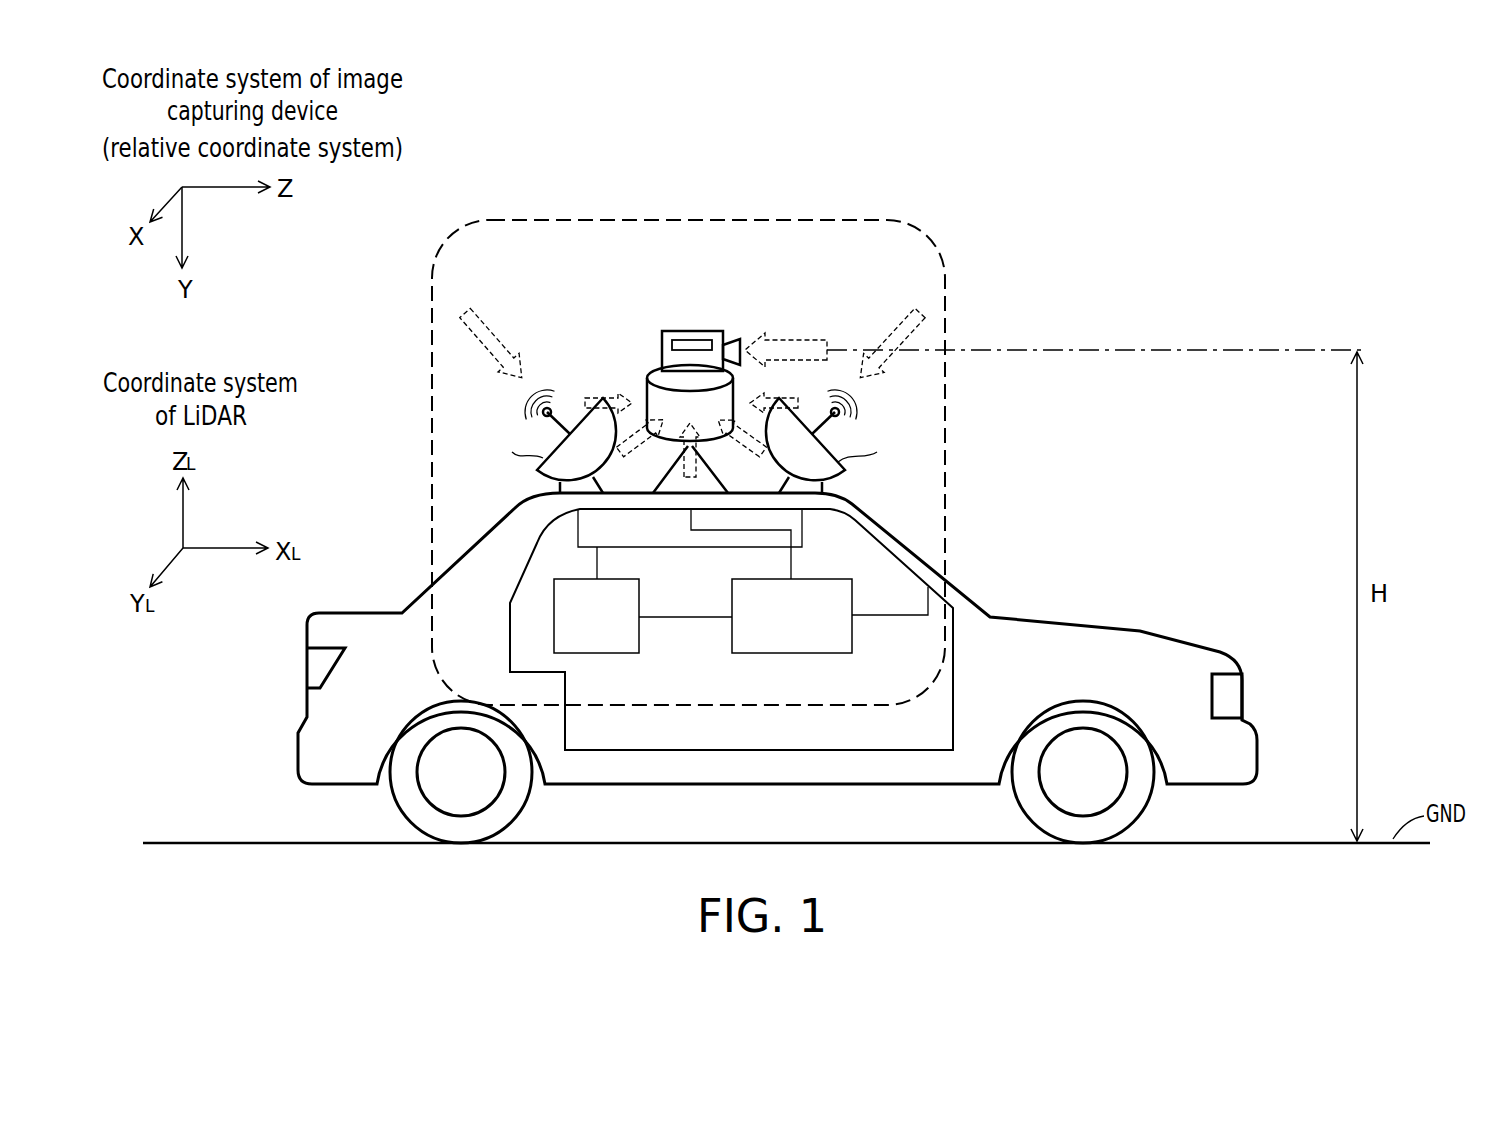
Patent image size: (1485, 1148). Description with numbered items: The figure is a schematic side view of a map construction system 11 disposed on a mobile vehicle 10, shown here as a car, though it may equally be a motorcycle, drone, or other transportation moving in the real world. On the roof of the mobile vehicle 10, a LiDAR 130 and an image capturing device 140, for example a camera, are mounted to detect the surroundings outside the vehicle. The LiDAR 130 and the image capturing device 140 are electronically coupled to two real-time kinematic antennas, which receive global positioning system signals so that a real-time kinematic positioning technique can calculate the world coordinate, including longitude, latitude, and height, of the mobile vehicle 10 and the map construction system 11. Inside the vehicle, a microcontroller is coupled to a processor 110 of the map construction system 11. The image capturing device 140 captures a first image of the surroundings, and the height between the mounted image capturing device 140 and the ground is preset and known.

The mobile vehicle 10 is at (1167, 634).
The map construction system 11 is at (930, 240).
The processor 110 is at (853, 638).
The LiDAR 130 is at (651, 365).
The image capturing device 140 is at (705, 331).